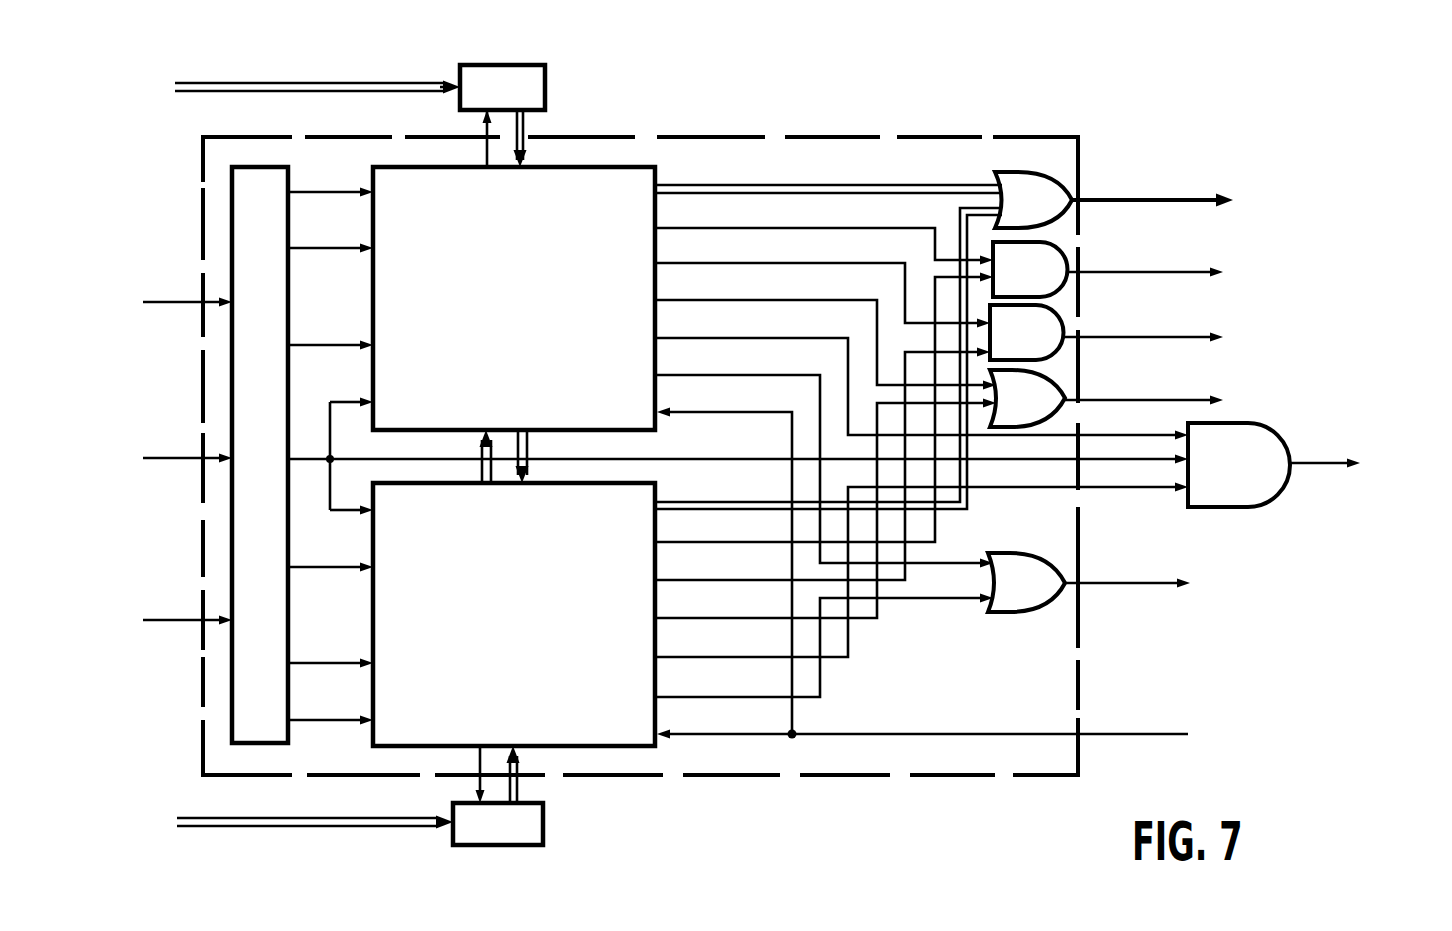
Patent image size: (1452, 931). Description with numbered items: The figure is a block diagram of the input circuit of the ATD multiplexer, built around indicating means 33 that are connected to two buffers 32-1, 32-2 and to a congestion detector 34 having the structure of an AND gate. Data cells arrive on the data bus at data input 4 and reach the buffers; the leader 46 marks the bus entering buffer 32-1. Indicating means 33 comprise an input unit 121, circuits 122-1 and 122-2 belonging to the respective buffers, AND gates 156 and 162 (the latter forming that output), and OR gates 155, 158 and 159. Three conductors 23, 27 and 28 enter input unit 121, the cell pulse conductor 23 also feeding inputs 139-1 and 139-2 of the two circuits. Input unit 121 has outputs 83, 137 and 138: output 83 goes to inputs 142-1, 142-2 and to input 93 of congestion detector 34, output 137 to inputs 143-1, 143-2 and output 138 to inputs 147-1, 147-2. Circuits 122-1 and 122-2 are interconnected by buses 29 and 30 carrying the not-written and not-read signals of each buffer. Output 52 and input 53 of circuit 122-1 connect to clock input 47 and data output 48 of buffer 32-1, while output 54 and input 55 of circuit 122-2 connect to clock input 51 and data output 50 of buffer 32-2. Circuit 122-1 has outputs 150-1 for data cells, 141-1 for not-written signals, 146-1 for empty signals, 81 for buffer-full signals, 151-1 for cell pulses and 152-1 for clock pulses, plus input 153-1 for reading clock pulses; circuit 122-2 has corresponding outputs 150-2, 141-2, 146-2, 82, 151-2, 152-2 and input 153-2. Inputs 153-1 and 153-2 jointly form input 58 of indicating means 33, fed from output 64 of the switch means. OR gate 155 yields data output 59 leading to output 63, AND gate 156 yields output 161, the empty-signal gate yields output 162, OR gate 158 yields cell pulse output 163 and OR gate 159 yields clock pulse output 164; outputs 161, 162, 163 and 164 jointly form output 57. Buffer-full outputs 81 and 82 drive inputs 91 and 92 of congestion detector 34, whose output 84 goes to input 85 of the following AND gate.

The data input 4 is at (175, 92).
The input line to buffer 46 is at (458, 76).
The buffer 32-1 is at (497, 65).
The buffer 32-2 is at (495, 845).
The clock input 47 is at (483, 114).
The data output 48 is at (526, 113).
The output 52 is at (484, 160).
The input 53 is at (526, 163).
The circuit 122-1 is at (627, 167).
The circuit 122-2 is at (630, 748).
The input unit 121 is at (232, 218).
The output 137 is at (293, 194).
The output 138 is at (292, 250).
The cell pulse conductor 23 is at (185, 622).
The conductor 27 is at (186, 305).
The conductor 28 is at (186, 461).
The output 83 is at (290, 461).
The input 143-1 is at (373, 192).
The input 147-1 is at (373, 248).
The input 139-1 is at (373, 345).
The input 142-1 is at (373, 402).
The input 143-2 is at (373, 720).
The input 147-2 is at (373, 663).
The input 139-2 is at (373, 567).
The input 142-2 is at (373, 510).
The output 150-1 is at (655, 189).
The output 141-1 is at (655, 228).
The output 146-1 is at (655, 263).
The output 151-1 is at (655, 300).
The output 81 is at (655, 338).
The output 152-1 is at (655, 375).
The input 153-1 is at (655, 412).
The output 150-2 is at (655, 506).
The output 141-2 is at (655, 542).
The output 146-2 is at (655, 580).
The output 151-2 is at (655, 618).
The output 82 is at (655, 657).
The output 152-2 is at (655, 697).
The input 153-2 is at (655, 734).
The bus 29 is at (478, 440).
The bus 30 is at (531, 440).
The output 54 is at (477, 750).
The input 55 is at (520, 750).
The clock input 51 is at (477, 797).
The data output 50 is at (520, 798).
The OR gate 155 is at (1032, 172).
The output 59 is at (1075, 200).
The external connection 63 is at (1260, 203).
The AND gate 156 is at (978, 270).
The output 161 is at (1068, 270).
The output 162 is at (1065, 336).
The output 163 is at (1068, 398).
The output 57 is at (1040, 360).
The OR gate 158 is at (1050, 421).
The OR gate 159 is at (1026, 553).
The output 164 is at (1068, 583).
The congestion detector 34 is at (1282, 491).
The input 91 is at (1197, 437).
The input 93 is at (1195, 461).
The input 92 is at (1186, 498).
The output 84 is at (1292, 462).
The input 85 is at (1385, 464).
The input 58 is at (1083, 731).
The output 64 is at (1215, 737).
The indicating means 33 is at (945, 778).